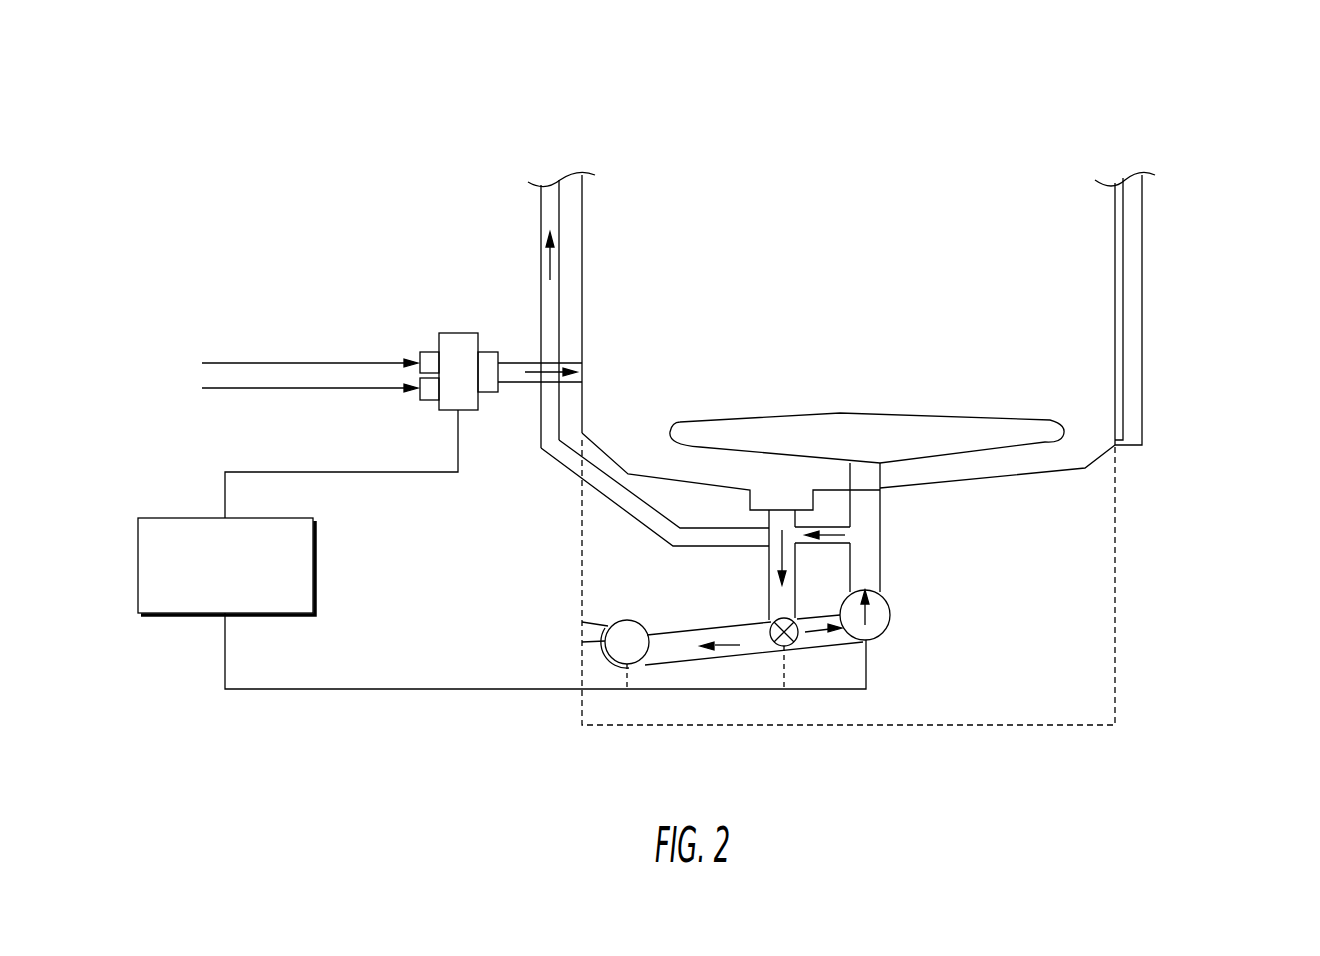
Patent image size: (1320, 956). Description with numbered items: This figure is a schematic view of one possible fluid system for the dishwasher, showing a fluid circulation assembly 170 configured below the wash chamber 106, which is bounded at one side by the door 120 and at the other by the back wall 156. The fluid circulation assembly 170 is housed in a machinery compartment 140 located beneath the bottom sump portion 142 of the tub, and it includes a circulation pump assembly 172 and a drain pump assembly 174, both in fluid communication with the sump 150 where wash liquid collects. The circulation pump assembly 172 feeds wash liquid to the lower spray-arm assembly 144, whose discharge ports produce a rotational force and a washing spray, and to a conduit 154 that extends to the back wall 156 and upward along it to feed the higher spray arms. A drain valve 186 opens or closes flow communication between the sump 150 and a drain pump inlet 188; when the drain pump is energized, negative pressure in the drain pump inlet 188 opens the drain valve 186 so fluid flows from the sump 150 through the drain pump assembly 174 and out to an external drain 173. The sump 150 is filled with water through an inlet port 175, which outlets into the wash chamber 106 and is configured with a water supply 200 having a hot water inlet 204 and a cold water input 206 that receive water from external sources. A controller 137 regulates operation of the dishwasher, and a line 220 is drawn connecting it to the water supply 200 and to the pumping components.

The wash chamber 106 is at (1012, 168).
The door 120 is at (1142, 285).
The controller 137 is at (210, 530).
The machinery compartment 140 is at (1115, 598).
The bottom sump portion 142 is at (985, 478).
The lower spray-arm assembly 144 is at (922, 425).
The sump 150 is at (786, 490).
The conduit 154 is at (582, 468).
The back wall 156 is at (582, 210).
The fluid circulation assembly 170 is at (936, 623).
The circulation pump assembly 172 is at (878, 622).
The external drain 173 is at (592, 632).
The drain pump assembly 174 is at (627, 642).
The inlet port 175 is at (585, 370).
The drain valve 186 is at (786, 646).
The drain pump inlet 188 is at (720, 657).
The water supply 200 is at (406, 322).
The hot water inlet 204 is at (235, 362).
The cold water input 206 is at (230, 388).
The control line 220 is at (322, 474).